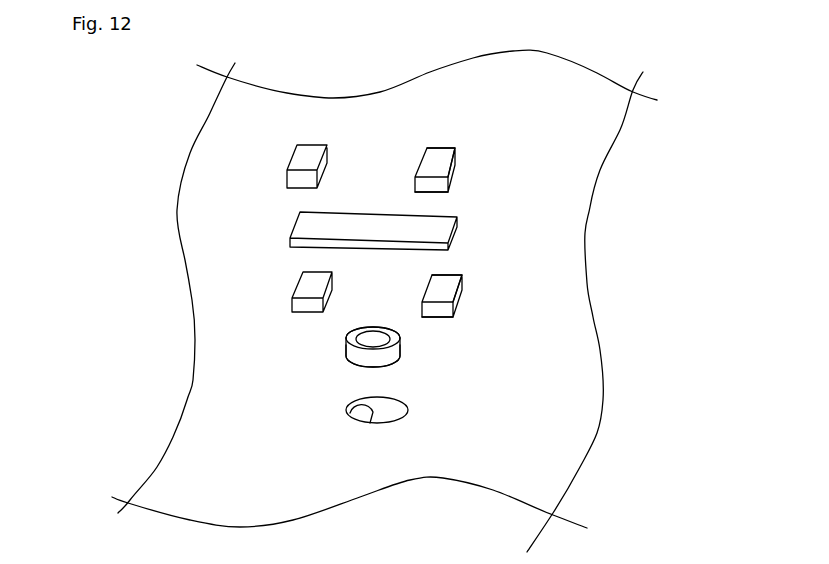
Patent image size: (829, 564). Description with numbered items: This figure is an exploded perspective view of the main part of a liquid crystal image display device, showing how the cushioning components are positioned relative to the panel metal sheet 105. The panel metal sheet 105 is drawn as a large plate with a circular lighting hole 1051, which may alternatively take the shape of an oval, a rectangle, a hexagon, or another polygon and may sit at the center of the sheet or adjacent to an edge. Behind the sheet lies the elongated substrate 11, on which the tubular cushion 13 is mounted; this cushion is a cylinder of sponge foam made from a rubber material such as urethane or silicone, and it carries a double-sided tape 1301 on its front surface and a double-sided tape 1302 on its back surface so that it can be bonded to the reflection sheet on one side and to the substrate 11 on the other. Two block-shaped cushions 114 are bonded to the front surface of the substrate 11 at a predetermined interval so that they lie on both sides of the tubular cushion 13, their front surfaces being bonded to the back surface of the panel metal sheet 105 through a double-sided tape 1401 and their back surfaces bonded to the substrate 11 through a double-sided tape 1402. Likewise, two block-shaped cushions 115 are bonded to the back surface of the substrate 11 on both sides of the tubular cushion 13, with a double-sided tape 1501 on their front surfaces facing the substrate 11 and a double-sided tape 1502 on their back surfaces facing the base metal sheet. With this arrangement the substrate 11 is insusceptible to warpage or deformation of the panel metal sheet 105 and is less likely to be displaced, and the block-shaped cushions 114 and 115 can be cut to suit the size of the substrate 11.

The panel metal sheet 105 is at (539, 440).
The lighting hole 1051 is at (362, 427).
The substrate 11 is at (325, 223).
The tubular cushion 13 is at (388, 362).
The double-sided tape 1301 is at (363, 372).
The double-sided tape 1302 is at (352, 337).
The block-shaped cushion 114 is at (293, 292).
The double-sided tape 1401 is at (437, 317).
The double-sided tape 1402 is at (443, 285).
The block-shaped cushion 115 is at (288, 167).
The double-sided tape 1501 is at (432, 192).
The double-sided tape 1502 is at (440, 157).